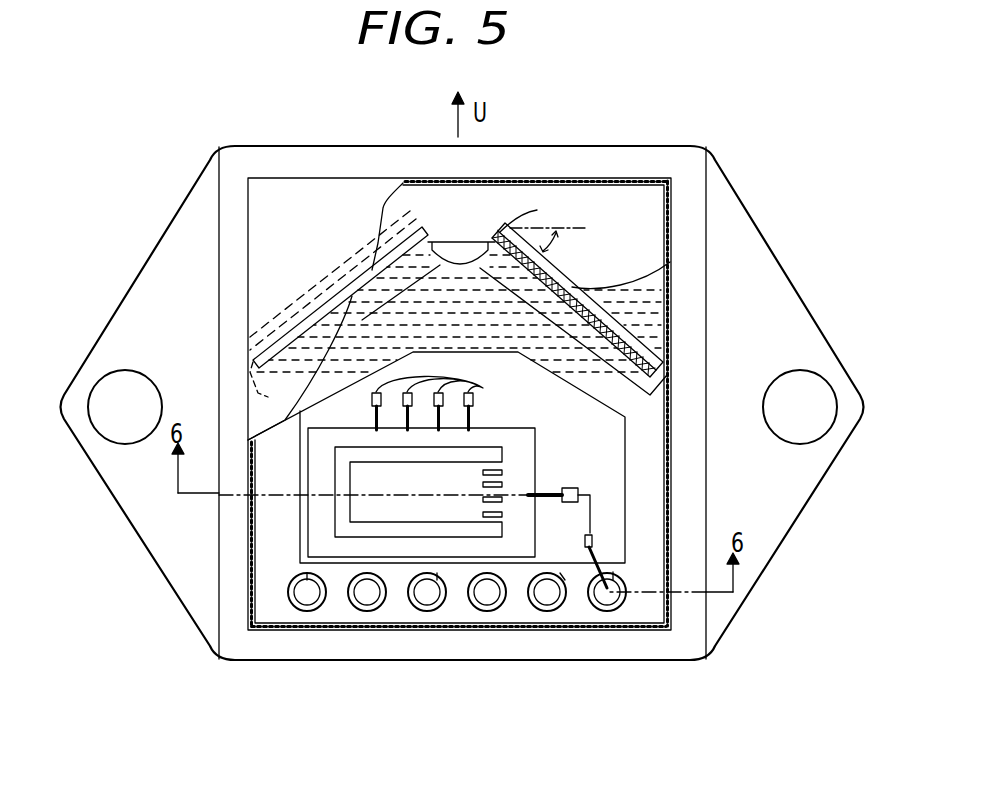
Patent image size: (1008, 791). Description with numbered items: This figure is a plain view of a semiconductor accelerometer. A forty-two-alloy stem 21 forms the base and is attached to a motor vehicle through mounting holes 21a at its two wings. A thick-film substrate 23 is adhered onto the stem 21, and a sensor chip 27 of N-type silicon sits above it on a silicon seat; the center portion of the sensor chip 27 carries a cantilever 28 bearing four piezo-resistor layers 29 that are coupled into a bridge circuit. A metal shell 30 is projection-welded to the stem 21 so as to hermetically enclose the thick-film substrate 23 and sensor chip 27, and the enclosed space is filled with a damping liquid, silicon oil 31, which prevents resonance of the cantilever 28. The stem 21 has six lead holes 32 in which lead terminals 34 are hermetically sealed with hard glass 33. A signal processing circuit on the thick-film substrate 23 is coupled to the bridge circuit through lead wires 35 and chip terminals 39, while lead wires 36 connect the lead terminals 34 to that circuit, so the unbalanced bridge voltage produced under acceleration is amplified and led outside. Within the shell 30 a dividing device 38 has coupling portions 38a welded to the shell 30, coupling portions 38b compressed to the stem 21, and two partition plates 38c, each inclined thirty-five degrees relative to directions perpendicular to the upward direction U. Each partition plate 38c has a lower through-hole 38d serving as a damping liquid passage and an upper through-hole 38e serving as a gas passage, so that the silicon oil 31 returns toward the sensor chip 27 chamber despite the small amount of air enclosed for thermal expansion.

The stem 21 is at (796, 302).
The mounting holes 21a is at (111, 388).
The thick-film substrate 23 is at (613, 507).
The sensor chip 27 is at (520, 437).
The cantilever 28 is at (362, 472).
The piezo-resistor layers 29 is at (483, 514).
The shell 30 is at (364, 195).
The silicon oil 31 is at (454, 282).
The lead holes 32 is at (365, 612).
The hard glass 33 is at (307, 573).
The lead terminals 34 is at (366, 596).
The lead wires 35 is at (553, 488).
The lead wires 36 is at (587, 552).
The dividing device 38 is at (560, 219).
The coupling portions 38a is at (637, 400).
The coupling portions 38b is at (425, 232).
The partition plates 38c is at (388, 251).
The through-hole 38d is at (347, 302).
The through-hole 38e is at (497, 238).
The chip terminals 39 is at (592, 533).